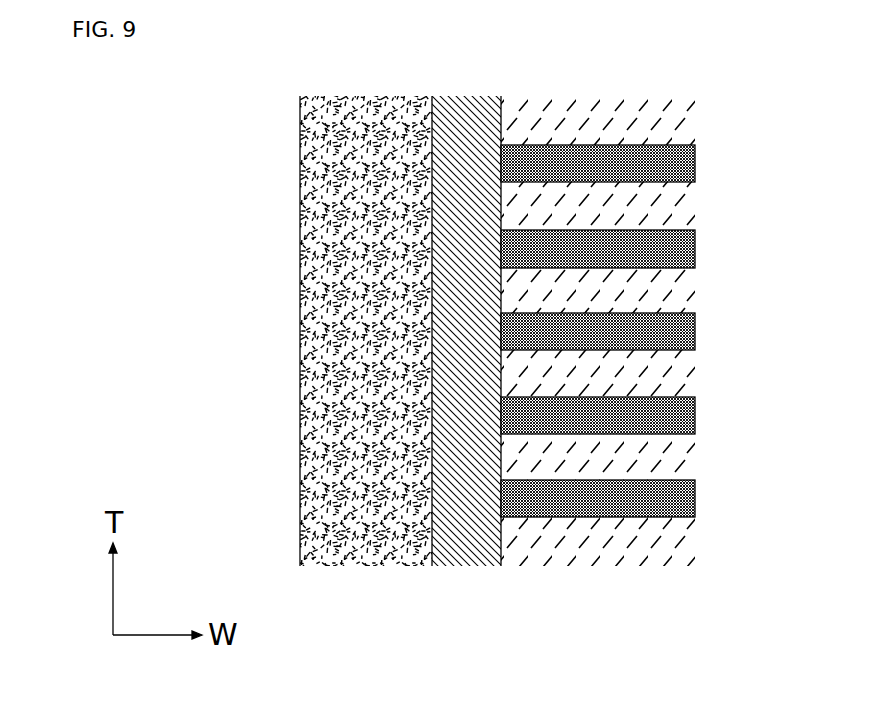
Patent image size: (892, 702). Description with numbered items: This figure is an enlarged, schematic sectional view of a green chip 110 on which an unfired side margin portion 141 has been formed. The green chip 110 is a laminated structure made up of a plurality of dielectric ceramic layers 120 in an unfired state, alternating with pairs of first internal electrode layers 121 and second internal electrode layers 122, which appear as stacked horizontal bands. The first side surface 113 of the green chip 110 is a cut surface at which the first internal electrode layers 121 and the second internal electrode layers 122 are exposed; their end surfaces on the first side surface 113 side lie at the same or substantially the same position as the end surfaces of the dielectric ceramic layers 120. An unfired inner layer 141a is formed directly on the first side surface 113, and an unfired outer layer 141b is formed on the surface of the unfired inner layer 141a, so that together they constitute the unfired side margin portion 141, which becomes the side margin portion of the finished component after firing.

The green chip 110 is at (449, 305).
The first side surface 113 is at (500, 369).
The dielectric ceramic layers 120 is at (688, 207).
The first internal electrode layer 121 is at (693, 163).
The second internal electrode layer 122 is at (693, 246).
The unfired side margin portion 141 is at (296, 331).
The unfired inner layer 141a is at (462, 239).
The unfired outer layer 141b is at (320, 137).